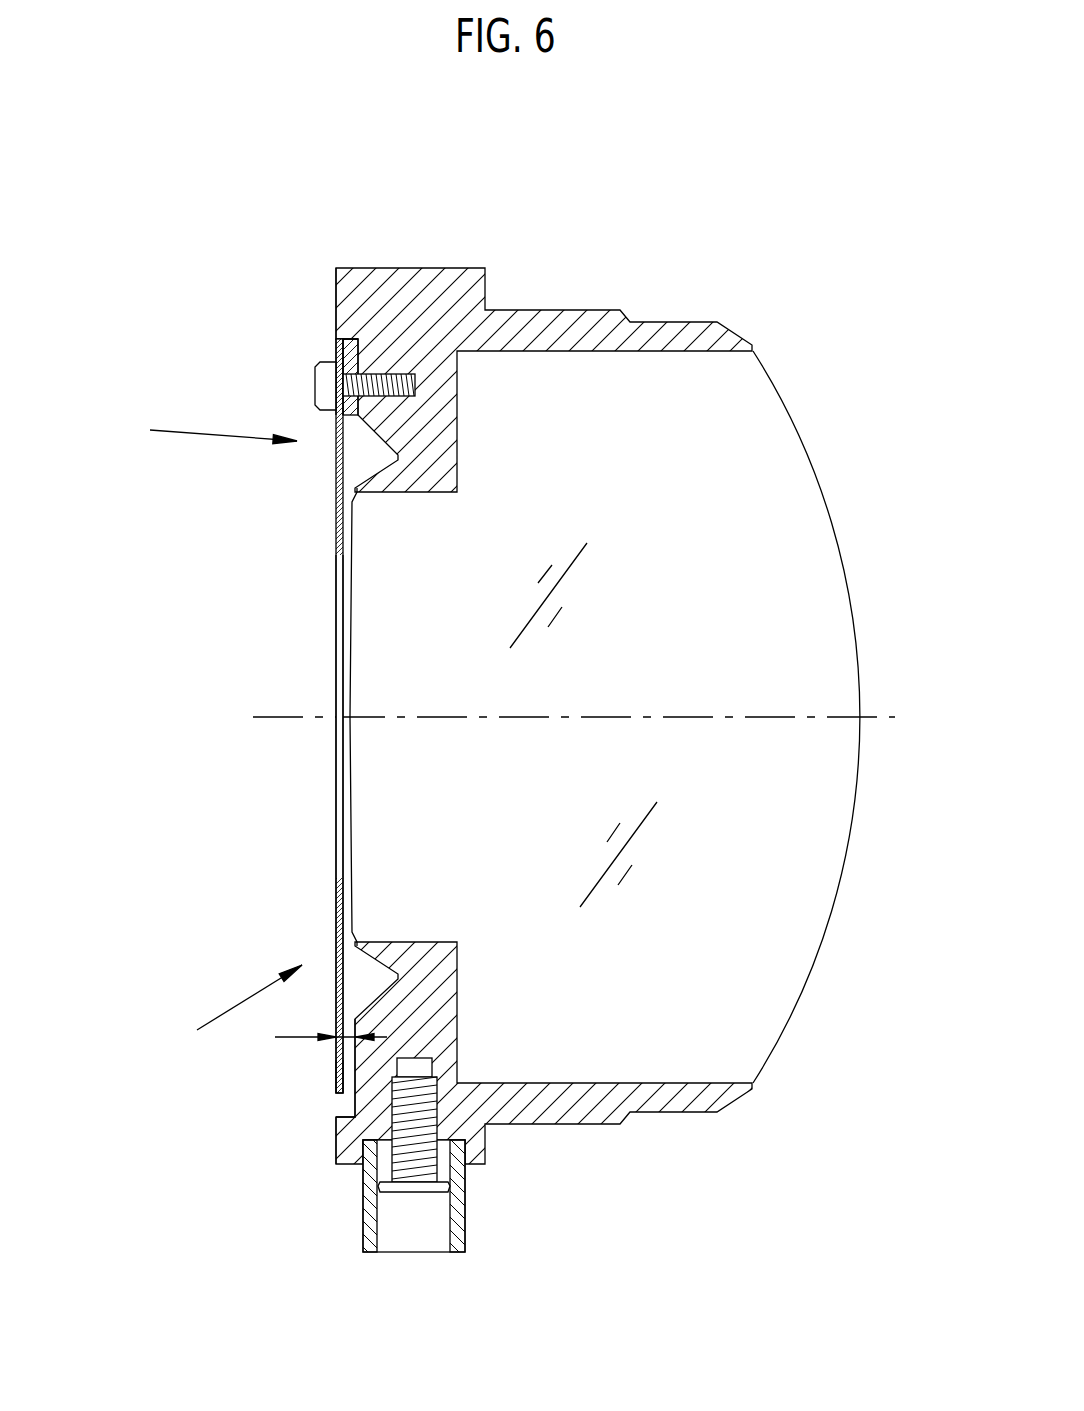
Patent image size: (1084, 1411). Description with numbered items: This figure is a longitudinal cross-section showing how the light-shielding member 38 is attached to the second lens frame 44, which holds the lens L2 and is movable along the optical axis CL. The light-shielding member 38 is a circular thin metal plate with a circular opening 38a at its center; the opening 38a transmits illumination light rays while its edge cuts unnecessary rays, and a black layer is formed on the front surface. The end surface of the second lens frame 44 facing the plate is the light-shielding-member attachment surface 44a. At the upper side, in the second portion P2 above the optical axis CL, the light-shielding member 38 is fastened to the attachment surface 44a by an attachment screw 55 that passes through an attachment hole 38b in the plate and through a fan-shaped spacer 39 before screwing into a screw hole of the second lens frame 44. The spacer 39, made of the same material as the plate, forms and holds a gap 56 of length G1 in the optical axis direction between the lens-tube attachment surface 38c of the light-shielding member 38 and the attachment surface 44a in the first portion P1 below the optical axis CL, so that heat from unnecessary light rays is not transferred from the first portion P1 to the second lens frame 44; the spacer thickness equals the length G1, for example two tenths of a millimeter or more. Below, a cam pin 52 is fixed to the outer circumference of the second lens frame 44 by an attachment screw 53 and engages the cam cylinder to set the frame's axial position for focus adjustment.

The second lens frame 44 is at (467, 290).
The light-shielding-member attachment surface 44a is at (346, 336).
The spacer 39 is at (335, 360).
The attachment screw 55 is at (315, 385).
The light-shielding member 38 is at (337, 493).
The opening 38a is at (333, 562).
The attachment hole 38b is at (336, 399).
The lens-tube attachment surface 38c is at (344, 900).
The gap 56 is at (340, 1073).
The cam pin 52 is at (468, 1222).
The attachment screw 53 is at (415, 1192).
The lens L2 is at (762, 432).
The optical axis CL is at (275, 718).
The first portion P1 is at (236, 1016).
The second portion P2 is at (191, 430).
The length of the gap G1 is at (331, 1020).